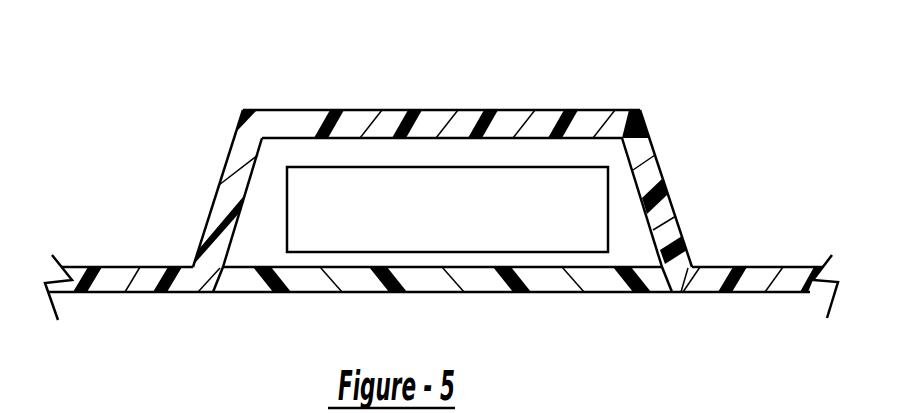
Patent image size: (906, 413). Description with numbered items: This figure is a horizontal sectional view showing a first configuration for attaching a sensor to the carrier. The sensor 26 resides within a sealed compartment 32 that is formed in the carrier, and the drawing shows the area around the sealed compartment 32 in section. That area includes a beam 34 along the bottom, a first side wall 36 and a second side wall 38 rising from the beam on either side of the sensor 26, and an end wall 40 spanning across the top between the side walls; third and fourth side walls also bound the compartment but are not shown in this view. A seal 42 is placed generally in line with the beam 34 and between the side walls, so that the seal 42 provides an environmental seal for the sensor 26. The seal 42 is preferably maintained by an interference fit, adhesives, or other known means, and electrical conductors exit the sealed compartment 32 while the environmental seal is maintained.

The sensor 26 is at (323, 181).
The sealed compartment 32 is at (464, 147).
The beam 34 is at (138, 293).
The first side wall 36 is at (218, 190).
The second side wall 38 is at (670, 196).
The end wall 40 is at (435, 110).
The seal 42 is at (407, 293).